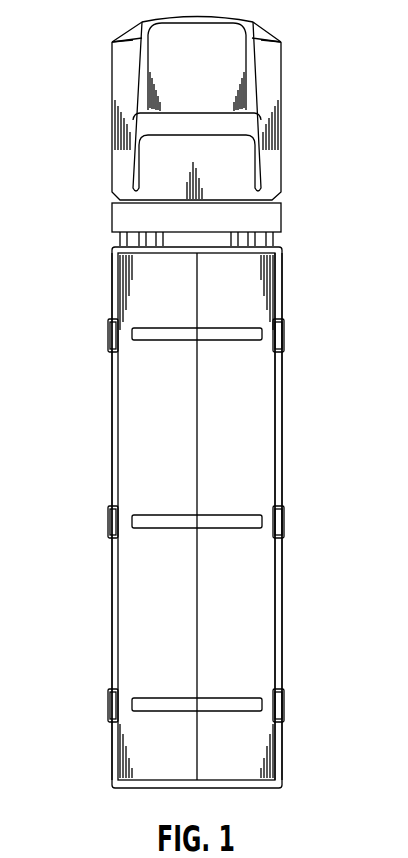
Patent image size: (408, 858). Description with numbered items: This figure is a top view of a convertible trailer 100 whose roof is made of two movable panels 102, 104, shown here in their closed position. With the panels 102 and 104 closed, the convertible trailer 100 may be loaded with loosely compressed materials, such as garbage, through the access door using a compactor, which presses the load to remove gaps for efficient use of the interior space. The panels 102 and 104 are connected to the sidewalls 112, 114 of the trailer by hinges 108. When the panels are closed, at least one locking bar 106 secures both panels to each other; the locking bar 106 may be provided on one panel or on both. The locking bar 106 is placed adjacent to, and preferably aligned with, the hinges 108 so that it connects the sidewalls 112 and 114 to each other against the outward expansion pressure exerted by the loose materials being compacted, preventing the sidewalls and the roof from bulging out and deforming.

The convertible trailer 100 is at (276, 786).
The movable panel 102 is at (137, 625).
The movable panel 104 is at (255, 411).
The locking bar 106 is at (177, 337).
The hinges 108 is at (108, 336).
The sidewall 112 is at (288, 450).
The sidewall 114 is at (112, 445).